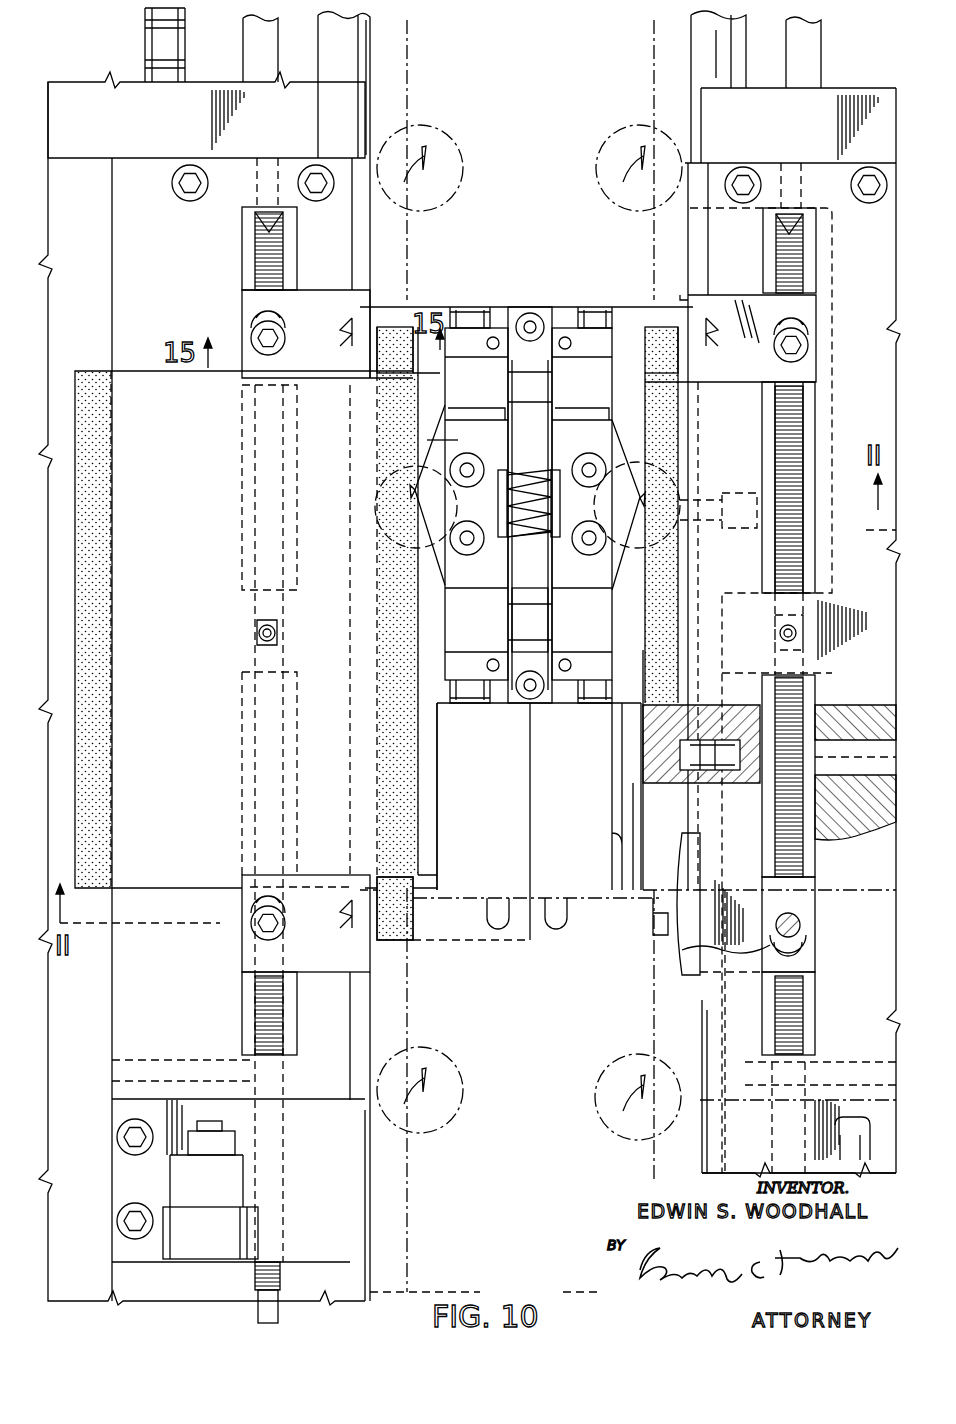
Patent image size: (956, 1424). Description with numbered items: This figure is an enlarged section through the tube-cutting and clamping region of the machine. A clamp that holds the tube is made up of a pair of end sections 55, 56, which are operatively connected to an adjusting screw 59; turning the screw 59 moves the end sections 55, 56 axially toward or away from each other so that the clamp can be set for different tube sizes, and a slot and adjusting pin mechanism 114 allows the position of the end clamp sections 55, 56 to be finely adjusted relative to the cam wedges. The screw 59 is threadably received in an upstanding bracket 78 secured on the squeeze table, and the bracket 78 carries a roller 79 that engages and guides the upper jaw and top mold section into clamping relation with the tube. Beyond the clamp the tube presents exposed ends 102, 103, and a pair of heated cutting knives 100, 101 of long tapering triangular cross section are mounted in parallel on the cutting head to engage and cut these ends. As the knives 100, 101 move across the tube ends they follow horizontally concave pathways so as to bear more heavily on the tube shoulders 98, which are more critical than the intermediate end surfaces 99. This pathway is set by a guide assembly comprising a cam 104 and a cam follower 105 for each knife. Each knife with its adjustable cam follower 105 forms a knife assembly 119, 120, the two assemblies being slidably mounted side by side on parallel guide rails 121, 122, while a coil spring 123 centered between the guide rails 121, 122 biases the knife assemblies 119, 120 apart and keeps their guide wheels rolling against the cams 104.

The end section 55 is at (318, 288).
The end section 56 is at (317, 975).
The adjusting screw 59 is at (250, 989).
The bracket 78 is at (345, 1244).
The roller 79 is at (240, 1233).
The shoulder of tube 98 is at (420, 392).
The tube end surface 99 is at (424, 440).
The cutting knife 100 is at (598, 181).
The cutting knife 101 is at (423, 172).
The exposed tube end 102 is at (622, 835).
The exposed tube end 103 is at (437, 790).
The cam 104 is at (376, 445).
The cam follower 105 is at (430, 128).
The slot and adjusting pin mechanism 114 is at (260, 336).
The knife assembly 119 is at (590, 335).
The knife assembly 120 is at (467, 335).
The guide rail 121 is at (524, 405).
The guide rail 122 is at (528, 609).
The coil spring 123 is at (538, 498).